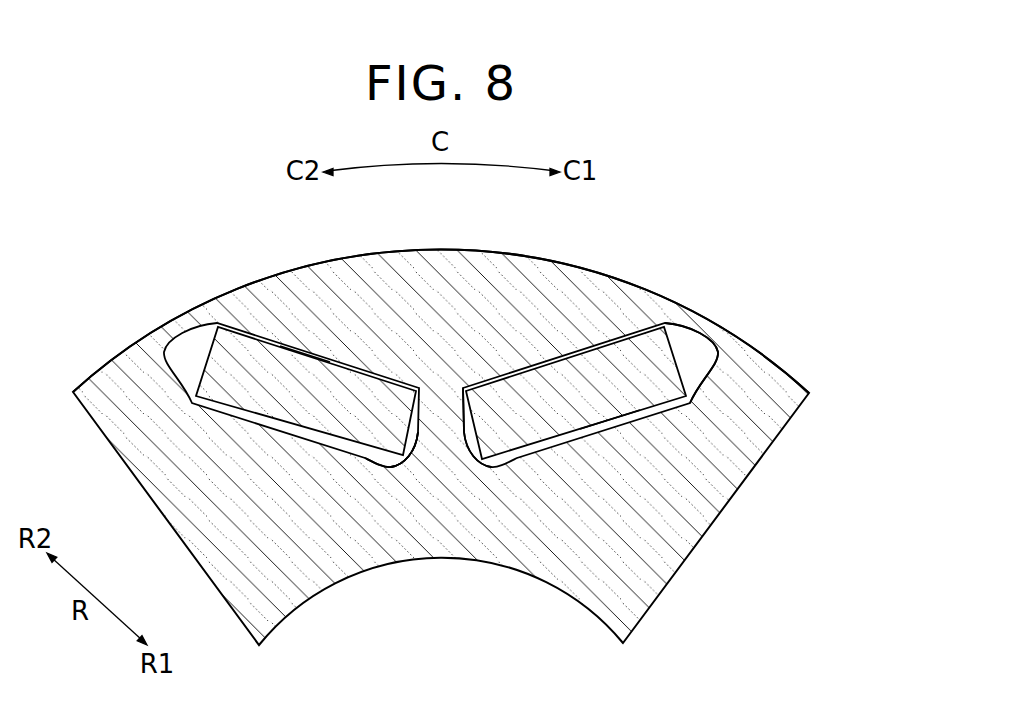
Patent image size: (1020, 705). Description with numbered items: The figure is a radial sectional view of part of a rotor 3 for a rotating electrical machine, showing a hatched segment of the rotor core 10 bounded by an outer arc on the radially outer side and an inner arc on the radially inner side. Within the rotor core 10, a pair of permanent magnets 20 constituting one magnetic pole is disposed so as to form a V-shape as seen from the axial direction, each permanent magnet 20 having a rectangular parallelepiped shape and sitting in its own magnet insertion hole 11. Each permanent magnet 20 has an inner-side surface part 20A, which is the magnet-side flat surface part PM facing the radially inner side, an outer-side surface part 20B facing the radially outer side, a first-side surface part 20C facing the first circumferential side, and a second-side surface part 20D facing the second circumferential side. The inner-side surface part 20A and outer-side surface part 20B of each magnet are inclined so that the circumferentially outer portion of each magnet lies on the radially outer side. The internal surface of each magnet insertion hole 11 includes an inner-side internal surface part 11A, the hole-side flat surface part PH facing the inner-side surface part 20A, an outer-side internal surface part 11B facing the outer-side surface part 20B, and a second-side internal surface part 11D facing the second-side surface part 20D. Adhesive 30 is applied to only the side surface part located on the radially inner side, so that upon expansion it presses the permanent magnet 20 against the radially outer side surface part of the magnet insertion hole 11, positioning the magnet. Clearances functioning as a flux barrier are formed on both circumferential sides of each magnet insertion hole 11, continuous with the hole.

The rotor 3 is at (457, 441).
The rotor core 10 is at (655, 600).
The magnet insertion hole 11 is at (258, 332).
The inner-side internal surface part 11A is at (593, 428).
The outer-side internal surface part 11B is at (328, 358).
The second-side internal surface part 11D is at (466, 411).
The permanent magnet 20 is at (217, 363).
The inner-side surface part 20A is at (237, 427).
The outer-side surface part 20B is at (554, 352).
The first-side surface part 20C is at (677, 352).
The second-side surface part 20D is at (407, 427).
The adhesive 30 is at (387, 467).